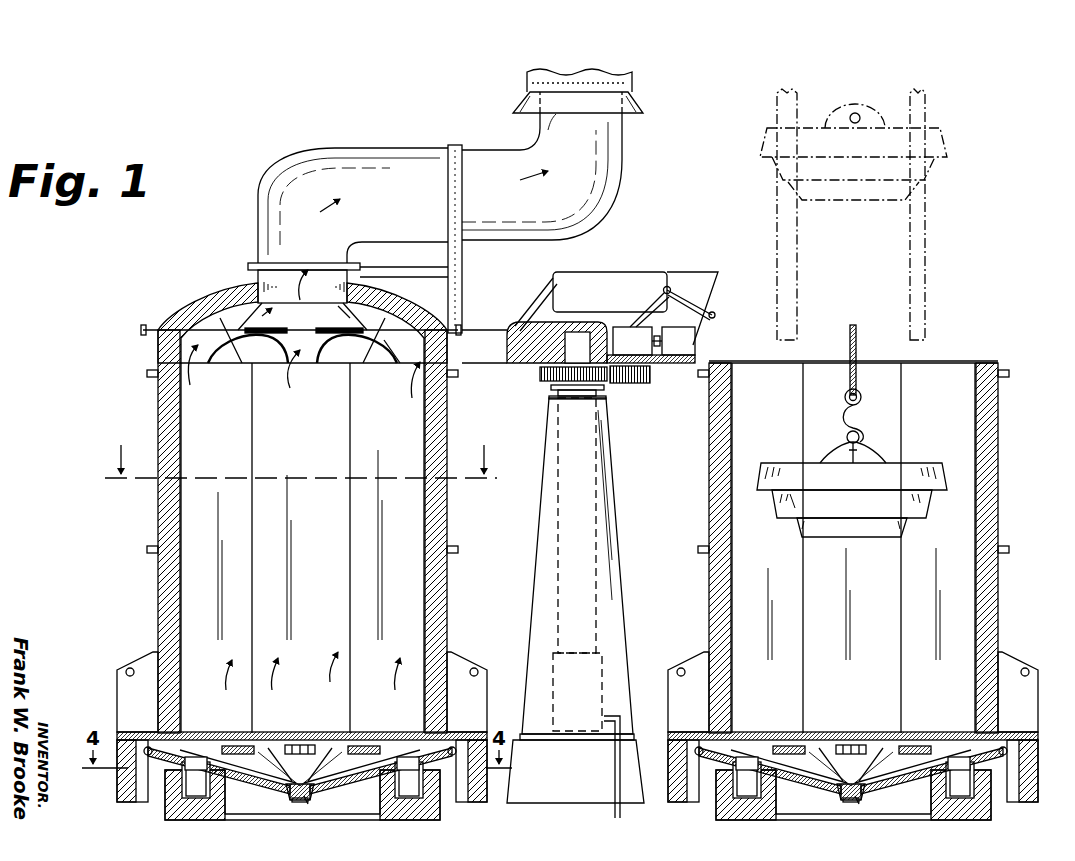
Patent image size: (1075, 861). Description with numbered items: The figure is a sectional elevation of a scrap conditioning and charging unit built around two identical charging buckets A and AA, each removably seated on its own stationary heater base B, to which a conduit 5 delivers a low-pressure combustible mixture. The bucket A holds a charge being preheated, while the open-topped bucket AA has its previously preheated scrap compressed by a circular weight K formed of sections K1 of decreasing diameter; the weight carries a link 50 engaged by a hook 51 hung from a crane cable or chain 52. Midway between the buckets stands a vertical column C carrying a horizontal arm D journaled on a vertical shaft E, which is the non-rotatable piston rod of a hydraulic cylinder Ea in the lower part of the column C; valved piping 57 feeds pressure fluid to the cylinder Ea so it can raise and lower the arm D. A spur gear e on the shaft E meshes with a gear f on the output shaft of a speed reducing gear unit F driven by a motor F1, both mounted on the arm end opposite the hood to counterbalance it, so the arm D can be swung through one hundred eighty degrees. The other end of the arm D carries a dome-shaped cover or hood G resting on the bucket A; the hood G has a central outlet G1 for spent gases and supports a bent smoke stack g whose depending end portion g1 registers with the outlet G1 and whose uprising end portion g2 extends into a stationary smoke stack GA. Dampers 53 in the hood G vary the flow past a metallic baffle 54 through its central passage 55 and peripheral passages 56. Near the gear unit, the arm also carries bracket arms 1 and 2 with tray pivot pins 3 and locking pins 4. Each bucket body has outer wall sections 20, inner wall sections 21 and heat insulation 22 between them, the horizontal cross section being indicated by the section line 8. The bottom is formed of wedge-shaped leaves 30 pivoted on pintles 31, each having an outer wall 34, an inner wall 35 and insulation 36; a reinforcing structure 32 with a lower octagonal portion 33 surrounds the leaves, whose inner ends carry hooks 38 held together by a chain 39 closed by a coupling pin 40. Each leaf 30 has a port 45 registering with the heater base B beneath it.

The scrap metal container or charging bucket A is at (567, 501).
The scrap metal container or charging bucket AA is at (1000, 458).
The stationary heater base element B is at (168, 815).
The vertical column C is at (612, 530).
The horizontal arm or beam D is at (518, 325).
The vertical shaft E is at (600, 500).
The hydraulic cylinder Ea is at (604, 674).
The speed reducing gear unit F is at (651, 345).
The motor F1 is at (678, 341).
The cover or hood G is at (213, 305).
The central outlet G1 is at (327, 302).
The vertical stationary smoke stack GA is at (632, 80).
The bent smoke stack g is at (430, 193).
The vertical depending end portion g1 is at (318, 232).
The uprising end portion g2 is at (602, 131).
The weight K is at (938, 146).
The weight sections K1 is at (790, 510).
The spur gear e is at (540, 375).
The gear f is at (650, 375).
The arm 1 is at (552, 286).
The arm 2 is at (718, 292).
The pintle or pivot pin 3 is at (667, 286).
The locking pin 4 is at (716, 315).
The conduit 5 is at (424, 790).
The section line 8 is at (301, 449).
The outer vertical metallic wall sections 20 is at (160, 546).
The inner vertical metallic wall sections 21 is at (183, 514).
The heat insulation material 22 is at (166, 506).
The bottom sections or leaves 30 is at (250, 778).
The horizontal pintle or shaft 31 is at (148, 745).
The reinforcing structure 32 is at (134, 664).
The lower octagonal portion 33 is at (448, 808).
The lower or outer metallic wall 34 is at (268, 777).
The upper or inner metallic wall 35 is at (310, 768).
The heat insulation material 36 is at (288, 750).
The hook portion 38 is at (310, 785).
The chain 39 is at (296, 794).
The coupling pin 40 is at (309, 797).
The port 45 is at (216, 750).
The link 50 is at (860, 435).
The hook 51 is at (846, 410).
The cable or chain 52 is at (857, 342).
The dampers 53 is at (320, 336).
The metallic baffle 54 is at (272, 350).
The central passage 55 is at (322, 350).
The peripheral passages 56 is at (410, 352).
The valved piping 57 is at (614, 810).